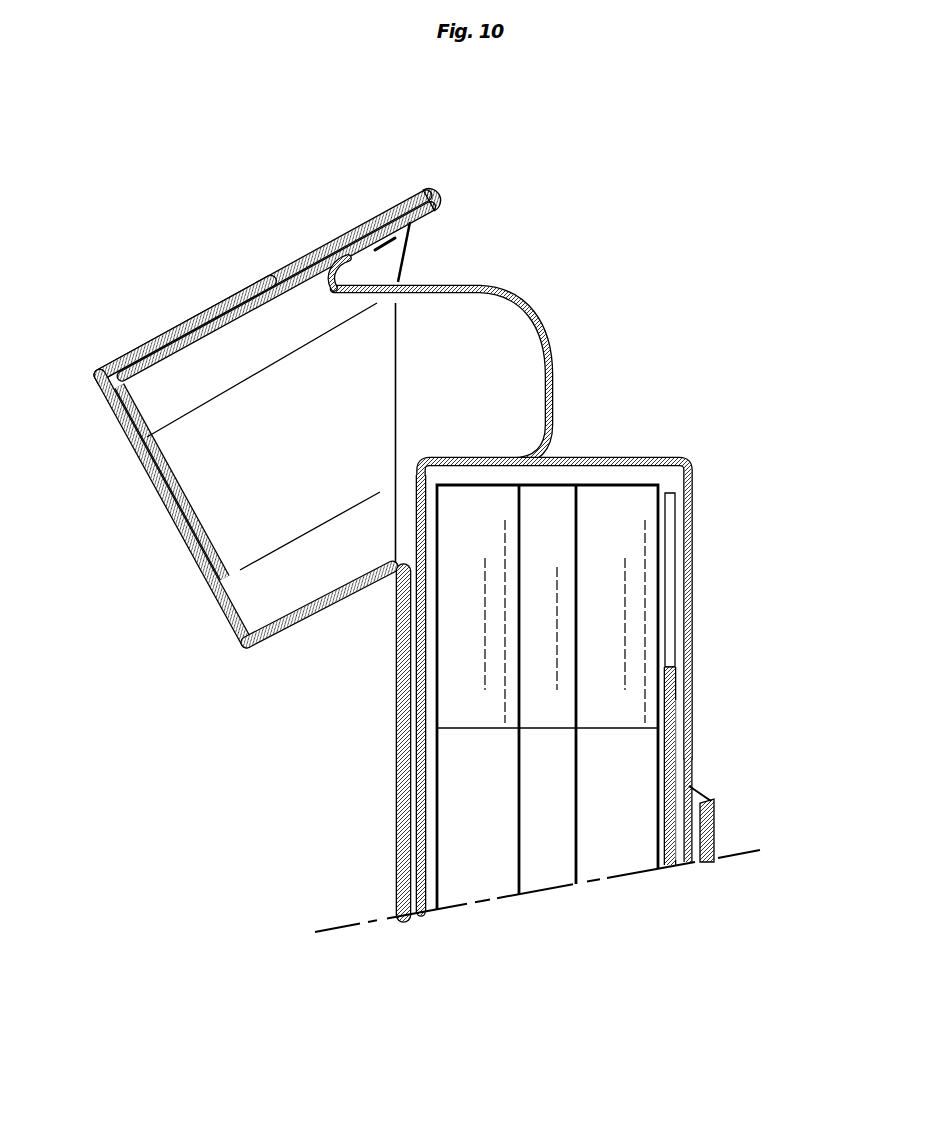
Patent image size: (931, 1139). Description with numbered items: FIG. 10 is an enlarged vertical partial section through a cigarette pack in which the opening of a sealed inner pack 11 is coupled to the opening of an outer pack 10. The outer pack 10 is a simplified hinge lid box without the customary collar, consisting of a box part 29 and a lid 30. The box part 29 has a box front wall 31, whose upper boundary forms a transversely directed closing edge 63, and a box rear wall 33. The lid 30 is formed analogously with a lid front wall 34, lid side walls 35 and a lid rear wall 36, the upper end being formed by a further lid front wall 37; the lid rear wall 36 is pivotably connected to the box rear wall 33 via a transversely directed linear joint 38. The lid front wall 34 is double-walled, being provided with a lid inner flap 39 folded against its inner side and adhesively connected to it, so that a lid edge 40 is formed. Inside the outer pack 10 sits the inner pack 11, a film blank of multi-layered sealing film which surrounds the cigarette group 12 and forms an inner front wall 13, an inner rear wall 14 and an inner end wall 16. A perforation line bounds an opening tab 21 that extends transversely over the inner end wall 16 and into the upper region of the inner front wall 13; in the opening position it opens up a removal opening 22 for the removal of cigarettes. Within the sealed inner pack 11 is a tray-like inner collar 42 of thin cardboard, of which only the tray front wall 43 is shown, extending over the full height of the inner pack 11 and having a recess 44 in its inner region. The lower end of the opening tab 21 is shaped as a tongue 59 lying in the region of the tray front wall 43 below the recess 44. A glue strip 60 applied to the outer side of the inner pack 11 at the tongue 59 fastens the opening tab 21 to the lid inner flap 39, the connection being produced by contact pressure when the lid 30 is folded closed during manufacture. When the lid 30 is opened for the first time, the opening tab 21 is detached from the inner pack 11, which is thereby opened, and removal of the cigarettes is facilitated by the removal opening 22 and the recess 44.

The outer pack 10 is at (217, 764).
The inner pack 11 is at (709, 386).
The cigarette group 12 is at (599, 483).
The inner front wall 13 is at (690, 773).
The inner rear wall 14 is at (417, 741).
The inner end wall 16 is at (572, 432).
The opening tab 21 is at (514, 304).
The removal opening 22 is at (673, 460).
The box part 29 is at (272, 917).
The lid 30 is at (150, 262).
The box front wall 31 is at (714, 823).
The box rear wall 33 is at (397, 847).
The lid front wall 34 is at (217, 305).
The lid side walls 35 is at (276, 476).
The lid rear wall 36 is at (290, 620).
The lid front wall 37 is at (166, 524).
The linear joint 38 is at (392, 578).
The lid inner flap 39 is at (160, 333).
The lid edge 40 is at (436, 192).
The inner collar 42 is at (677, 740).
The tray front wall 43 is at (669, 696).
The recess 44 is at (670, 666).
The tongue 59 is at (410, 228).
The glue strip 60 is at (347, 231).
The closing edge 63 is at (710, 803).